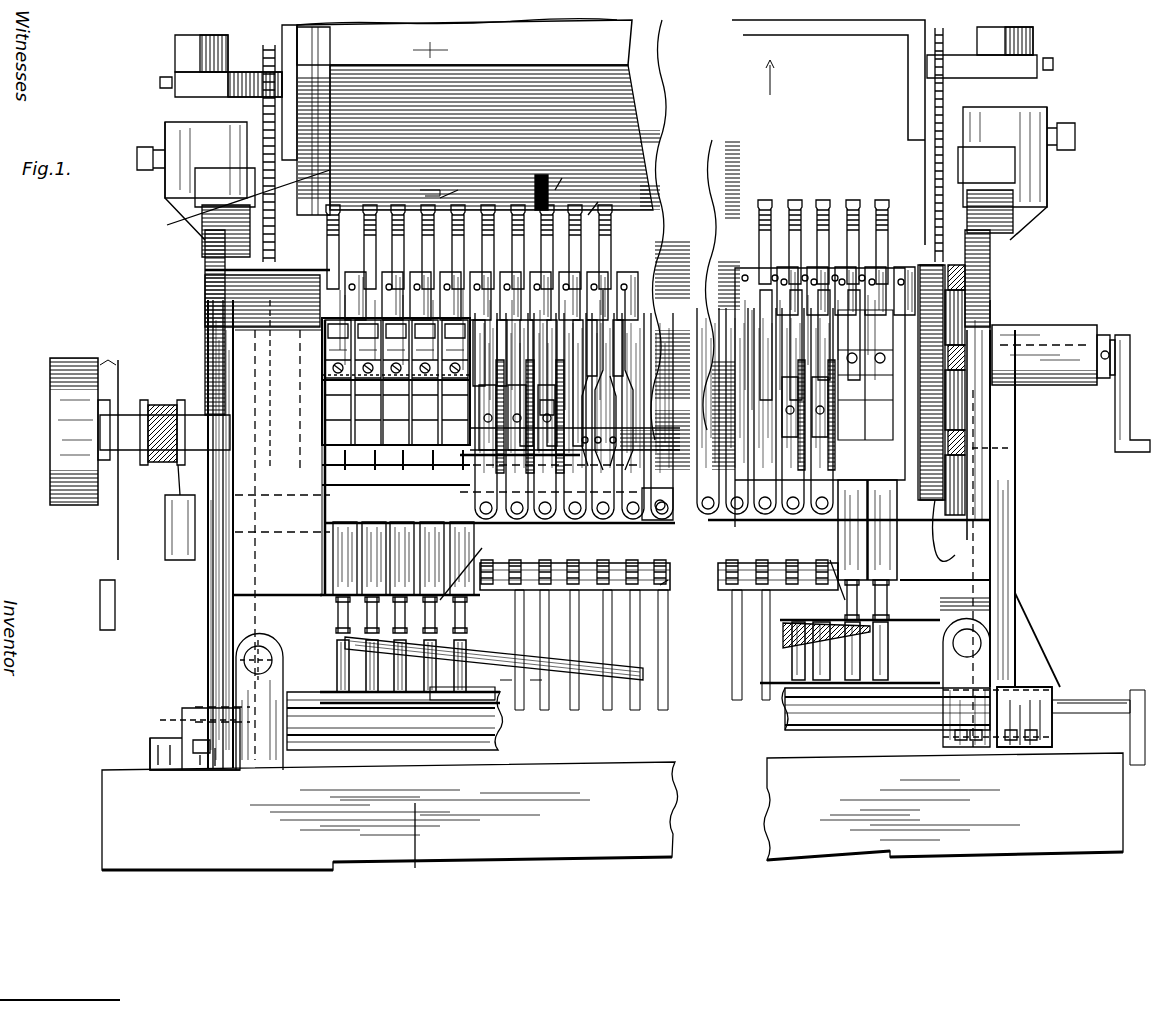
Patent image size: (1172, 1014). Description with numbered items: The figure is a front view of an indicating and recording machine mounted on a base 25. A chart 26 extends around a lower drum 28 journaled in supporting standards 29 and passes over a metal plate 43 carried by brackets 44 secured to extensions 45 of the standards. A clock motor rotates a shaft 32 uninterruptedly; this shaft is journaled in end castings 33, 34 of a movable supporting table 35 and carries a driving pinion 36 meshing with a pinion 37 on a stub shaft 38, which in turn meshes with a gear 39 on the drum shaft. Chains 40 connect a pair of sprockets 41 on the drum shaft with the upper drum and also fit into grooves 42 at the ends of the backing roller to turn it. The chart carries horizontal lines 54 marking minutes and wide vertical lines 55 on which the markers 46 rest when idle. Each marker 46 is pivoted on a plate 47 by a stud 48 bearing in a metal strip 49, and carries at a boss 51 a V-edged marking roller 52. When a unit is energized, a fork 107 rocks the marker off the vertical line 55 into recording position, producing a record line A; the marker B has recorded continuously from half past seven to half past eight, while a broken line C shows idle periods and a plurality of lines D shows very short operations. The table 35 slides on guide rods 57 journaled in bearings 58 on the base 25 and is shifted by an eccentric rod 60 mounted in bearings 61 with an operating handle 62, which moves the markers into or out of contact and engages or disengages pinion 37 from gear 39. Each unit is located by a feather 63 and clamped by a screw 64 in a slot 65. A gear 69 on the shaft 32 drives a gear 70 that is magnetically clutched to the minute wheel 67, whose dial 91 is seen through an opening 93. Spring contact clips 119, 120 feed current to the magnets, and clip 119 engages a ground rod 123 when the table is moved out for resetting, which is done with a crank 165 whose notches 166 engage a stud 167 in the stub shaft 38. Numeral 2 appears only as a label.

The base support 2 is at (428, 886).
The base 25 is at (763, 775).
The chart 26 is at (748, 125).
The lower drum 28 is at (722, 470).
The supporting standards 29 is at (208, 298).
The shaft 32 is at (175, 457).
The end casting 33 is at (243, 540).
The end casting 34 is at (987, 487).
The movable supporting table 35 is at (237, 610).
The driving pinion 36 is at (950, 412).
The pinion 37 is at (953, 287).
The stub shaft 38 is at (1037, 350).
The gear 39 is at (937, 253).
The chains 40 is at (263, 103).
The sprockets 41 is at (267, 463).
The grooves 42 is at (207, 265).
The metal plate 43 is at (733, 32).
The brackets 44 is at (245, 72).
The extensions 45 is at (182, 46).
The markers 46 is at (598, 258).
The plate 47 is at (737, 325).
The stud 48 is at (573, 517).
The metal strip 49 is at (700, 512).
The boss 51 is at (470, 216).
The V-edged marking roller 52 is at (603, 198).
The horizontal lines 54 is at (462, 65).
The vertical lines 55 is at (335, 68).
The guide rods 57 is at (243, 658).
The bearings 58 is at (238, 717).
The eccentric rod 60 is at (488, 737).
The bearings 61 is at (182, 718).
The operating handle 62 is at (923, 767).
The feather 63 is at (642, 566).
The screw 64 is at (347, 607).
The slot 65 is at (347, 628).
The minute wheel 67 is at (325, 388).
The gear 69 is at (527, 460).
The gear 70 is at (400, 443).
The dial 91 is at (52, 386).
The opening 93 is at (337, 397).
The fork 107 is at (620, 430).
The spring contact clip 119 is at (582, 558).
The spring contact clip 120 is at (665, 580).
The rod 123 is at (592, 707).
The crank 165 is at (1120, 403).
The notches 166 is at (1120, 340).
The stud 167 is at (1105, 345).
The vertical record line A is at (232, 203).
The marker B is at (332, 257).
The broken record line C is at (445, 184).
The plurality of lines D is at (566, 172).